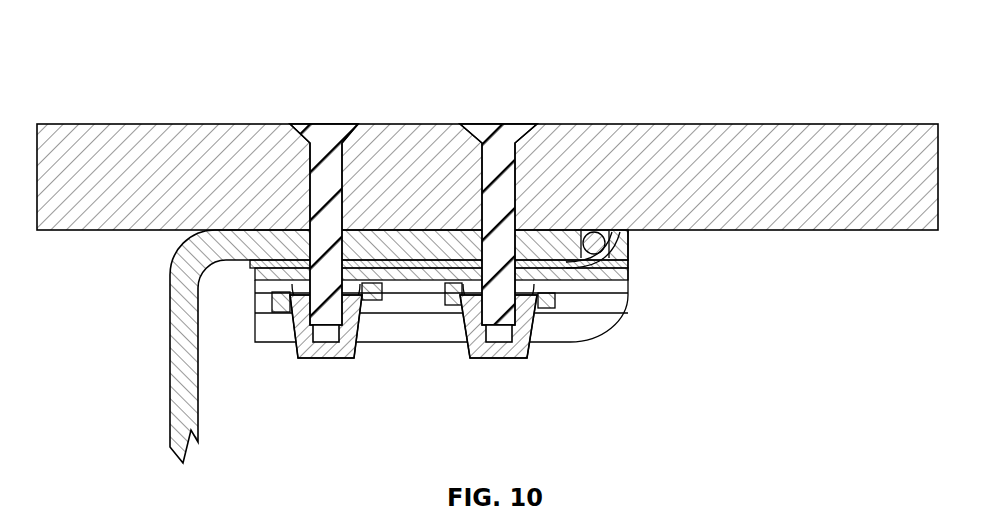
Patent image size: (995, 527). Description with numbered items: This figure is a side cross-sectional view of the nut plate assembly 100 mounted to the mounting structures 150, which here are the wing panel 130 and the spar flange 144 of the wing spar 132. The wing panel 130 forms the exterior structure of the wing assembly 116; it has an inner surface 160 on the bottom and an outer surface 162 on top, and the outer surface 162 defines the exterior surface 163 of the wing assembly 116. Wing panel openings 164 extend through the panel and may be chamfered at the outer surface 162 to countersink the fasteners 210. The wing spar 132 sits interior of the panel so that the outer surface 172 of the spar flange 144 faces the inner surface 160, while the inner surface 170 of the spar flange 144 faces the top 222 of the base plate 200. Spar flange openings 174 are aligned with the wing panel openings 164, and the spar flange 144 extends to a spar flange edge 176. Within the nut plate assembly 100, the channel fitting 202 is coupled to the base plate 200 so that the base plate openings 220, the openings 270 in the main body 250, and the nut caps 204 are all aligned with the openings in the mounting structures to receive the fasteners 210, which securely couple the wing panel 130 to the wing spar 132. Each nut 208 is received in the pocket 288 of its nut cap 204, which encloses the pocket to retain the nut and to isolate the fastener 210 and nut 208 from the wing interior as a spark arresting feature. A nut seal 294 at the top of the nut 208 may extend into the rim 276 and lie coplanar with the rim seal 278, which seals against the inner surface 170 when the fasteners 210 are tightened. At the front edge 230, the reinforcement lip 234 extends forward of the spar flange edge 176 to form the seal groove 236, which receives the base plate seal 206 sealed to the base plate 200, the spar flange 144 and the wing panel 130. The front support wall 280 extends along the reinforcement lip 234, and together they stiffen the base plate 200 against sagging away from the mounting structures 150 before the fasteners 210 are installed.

The nut plate assembly 100 is at (672, 304).
The wing assembly 116 is at (858, 101).
The wing panel 130 is at (897, 214).
The wing spar 132 is at (180, 404).
The spar flange 144 is at (456, 248).
The mounting structures 150 is at (146, 118).
The inner surface 160 is at (263, 236).
The outer surface 162 is at (306, 250).
The exterior surface 163 is at (750, 118).
The wing panel openings 164 is at (354, 250).
The inner surface 170 is at (578, 296).
The outer surface 172 is at (549, 266).
The spar flange openings 174 is at (508, 252).
The spar flange edge 176 is at (633, 268).
The base plate 200 is at (410, 313).
The channel fitting 202 is at (650, 262).
The nut cap 204 is at (538, 336).
The base plate seal 206 is at (610, 226).
The nut 208 is at (460, 303).
The fastener 210 is at (343, 172).
The base plate openings 220 is at (418, 262).
The top 222 is at (376, 300).
The front edge 230 is at (626, 238).
The reinforcement lip 234 is at (624, 248).
The seal groove 236 is at (604, 237).
The main body 250 is at (370, 298).
The opening 270 is at (510, 228).
The rim 276 is at (471, 296).
The rim seal 278 is at (316, 270).
The front support wall 280 is at (622, 258).
The pocket 288 is at (499, 338).
The nut seal 294 is at (547, 300).